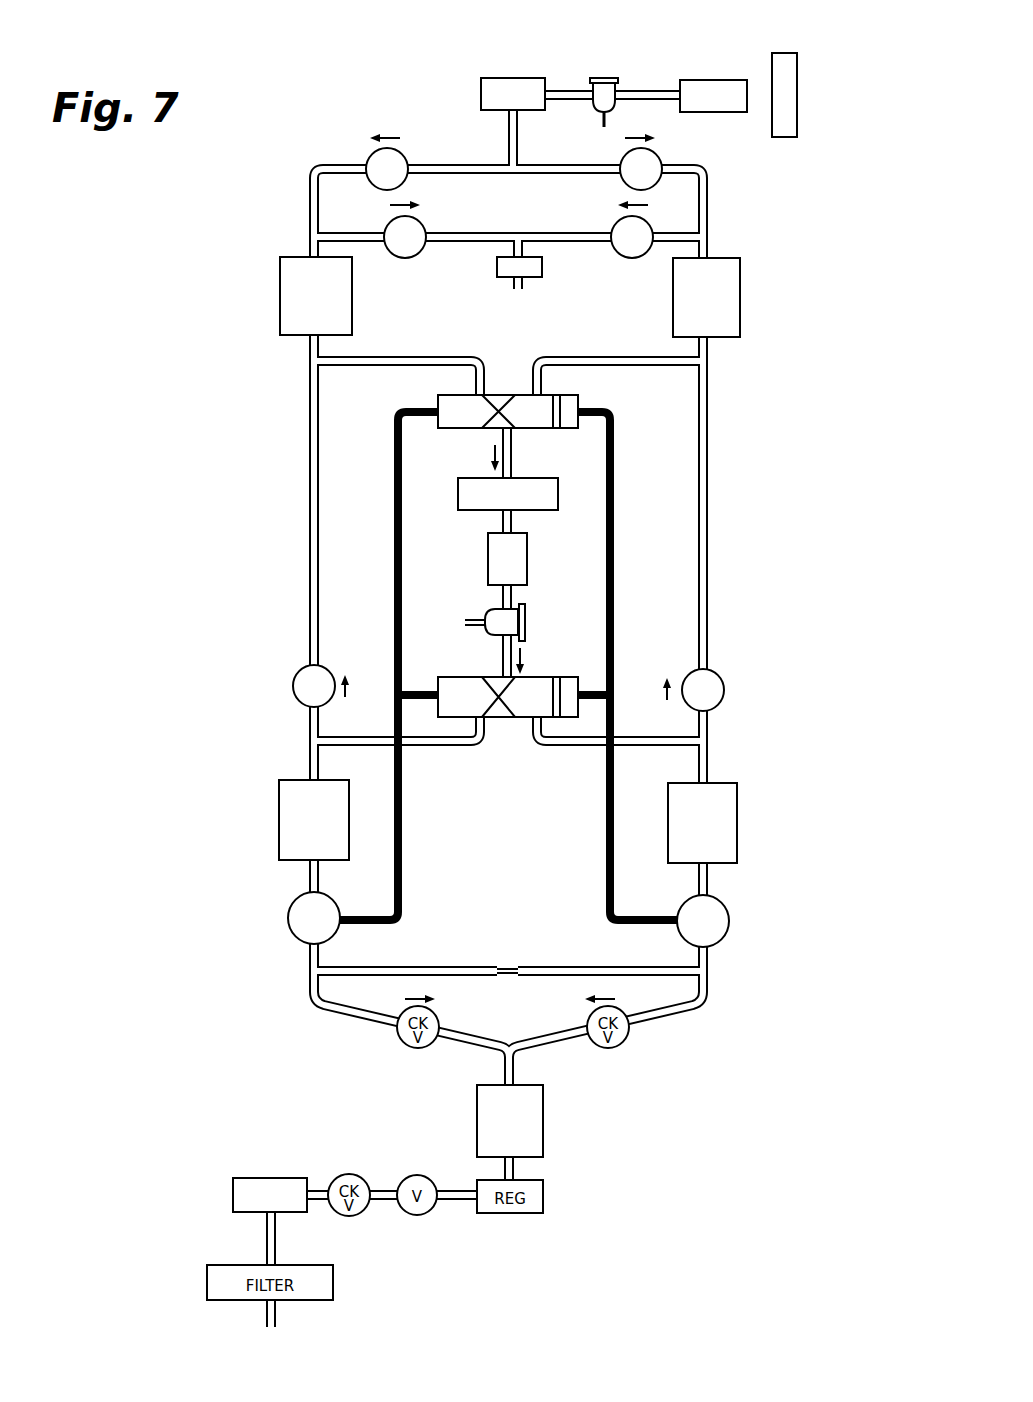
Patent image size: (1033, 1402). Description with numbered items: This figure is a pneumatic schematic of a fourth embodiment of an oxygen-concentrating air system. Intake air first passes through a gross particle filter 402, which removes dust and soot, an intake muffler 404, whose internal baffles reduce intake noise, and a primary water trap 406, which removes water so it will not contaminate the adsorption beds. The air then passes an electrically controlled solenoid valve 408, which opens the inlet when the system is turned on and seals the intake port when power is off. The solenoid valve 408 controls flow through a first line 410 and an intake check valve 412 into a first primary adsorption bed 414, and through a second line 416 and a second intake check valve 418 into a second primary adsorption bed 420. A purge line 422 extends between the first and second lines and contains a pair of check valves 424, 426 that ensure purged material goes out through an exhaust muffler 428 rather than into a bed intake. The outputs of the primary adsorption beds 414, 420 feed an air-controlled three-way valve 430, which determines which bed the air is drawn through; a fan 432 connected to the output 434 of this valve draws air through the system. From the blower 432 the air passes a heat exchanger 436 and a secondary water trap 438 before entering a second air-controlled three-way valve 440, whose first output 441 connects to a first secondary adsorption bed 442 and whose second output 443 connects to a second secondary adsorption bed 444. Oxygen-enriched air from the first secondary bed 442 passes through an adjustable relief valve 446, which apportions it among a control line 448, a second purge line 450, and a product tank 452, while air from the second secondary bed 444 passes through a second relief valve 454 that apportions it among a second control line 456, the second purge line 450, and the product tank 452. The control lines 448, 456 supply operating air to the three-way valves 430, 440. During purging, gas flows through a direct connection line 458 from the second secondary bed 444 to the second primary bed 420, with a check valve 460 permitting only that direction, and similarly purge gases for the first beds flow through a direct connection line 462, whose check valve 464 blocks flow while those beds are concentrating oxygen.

The gross particle filter 402 is at (797, 70).
The intake muffler 404 is at (715, 80).
The primary water trap 406 is at (605, 78).
The solenoid valve 408 is at (497, 78).
The first line 410 is at (460, 148).
The intake check valve 412 is at (367, 158).
The first primary adsorption bed 414 is at (280, 294).
The second line 416 is at (570, 153).
The second intake check valve 418 is at (657, 157).
The second primary adsorption bed 420 is at (729, 287).
The purge line 422 is at (500, 232).
The check valve 424 is at (416, 258).
The check valve 426 is at (624, 258).
The exhaust muffler 428 is at (540, 278).
The three-way valve 430 is at (580, 398).
The fan 432 is at (466, 503).
The output 434 is at (511, 447).
The heat exchanger 436 is at (518, 556).
The secondary water trap 438 is at (540, 612).
The second air-controlled three-way valve 440 is at (462, 692).
The first output 441 is at (430, 746).
The first secondary adsorption bed 442 is at (284, 812).
The second output 443 is at (580, 746).
The second secondary adsorption bed 444 is at (727, 822).
The adjustable relief valve 446 is at (290, 922).
The control line 448 is at (403, 827).
The second purge line 450 is at (475, 925).
The product tank 452 is at (531, 1121).
The second relief valve 454 is at (725, 935).
The second control line 456 is at (605, 869).
The direct connection line 458 is at (709, 536).
The check valve 460 is at (724, 692).
The direct connection line 462 is at (308, 563).
The check valve 464 is at (293, 685).